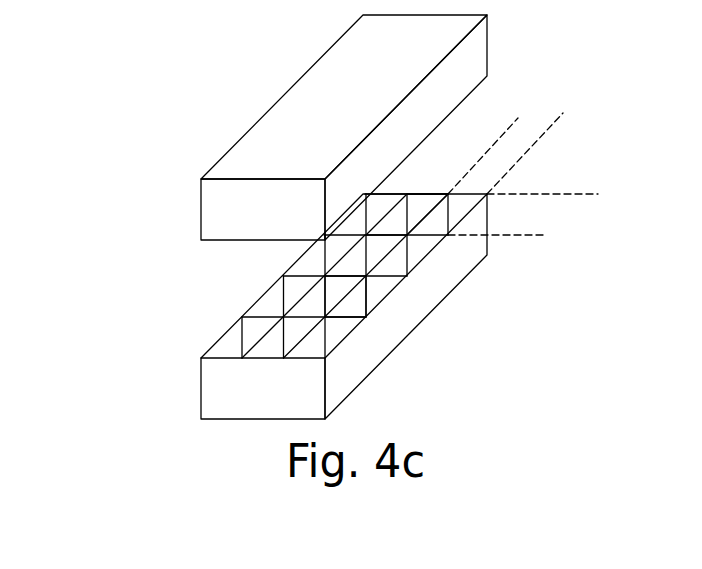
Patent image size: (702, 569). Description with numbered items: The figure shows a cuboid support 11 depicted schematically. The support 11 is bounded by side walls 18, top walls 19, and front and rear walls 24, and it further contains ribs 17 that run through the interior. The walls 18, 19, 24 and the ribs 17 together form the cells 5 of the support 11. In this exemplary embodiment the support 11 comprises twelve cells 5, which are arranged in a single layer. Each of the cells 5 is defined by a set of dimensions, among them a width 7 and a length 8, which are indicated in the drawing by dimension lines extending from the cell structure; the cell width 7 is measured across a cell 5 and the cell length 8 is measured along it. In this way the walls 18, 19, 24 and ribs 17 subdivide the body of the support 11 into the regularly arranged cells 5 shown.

The support 11 is at (140, 122).
The top walls 19 is at (270, 141).
The side walls 18 is at (478, 53).
The front and rear walls 24 is at (213, 223).
The cells 5 is at (260, 300).
The ribs 17 is at (388, 230).
The width 7 is at (516, 122).
The length 8 is at (587, 195).